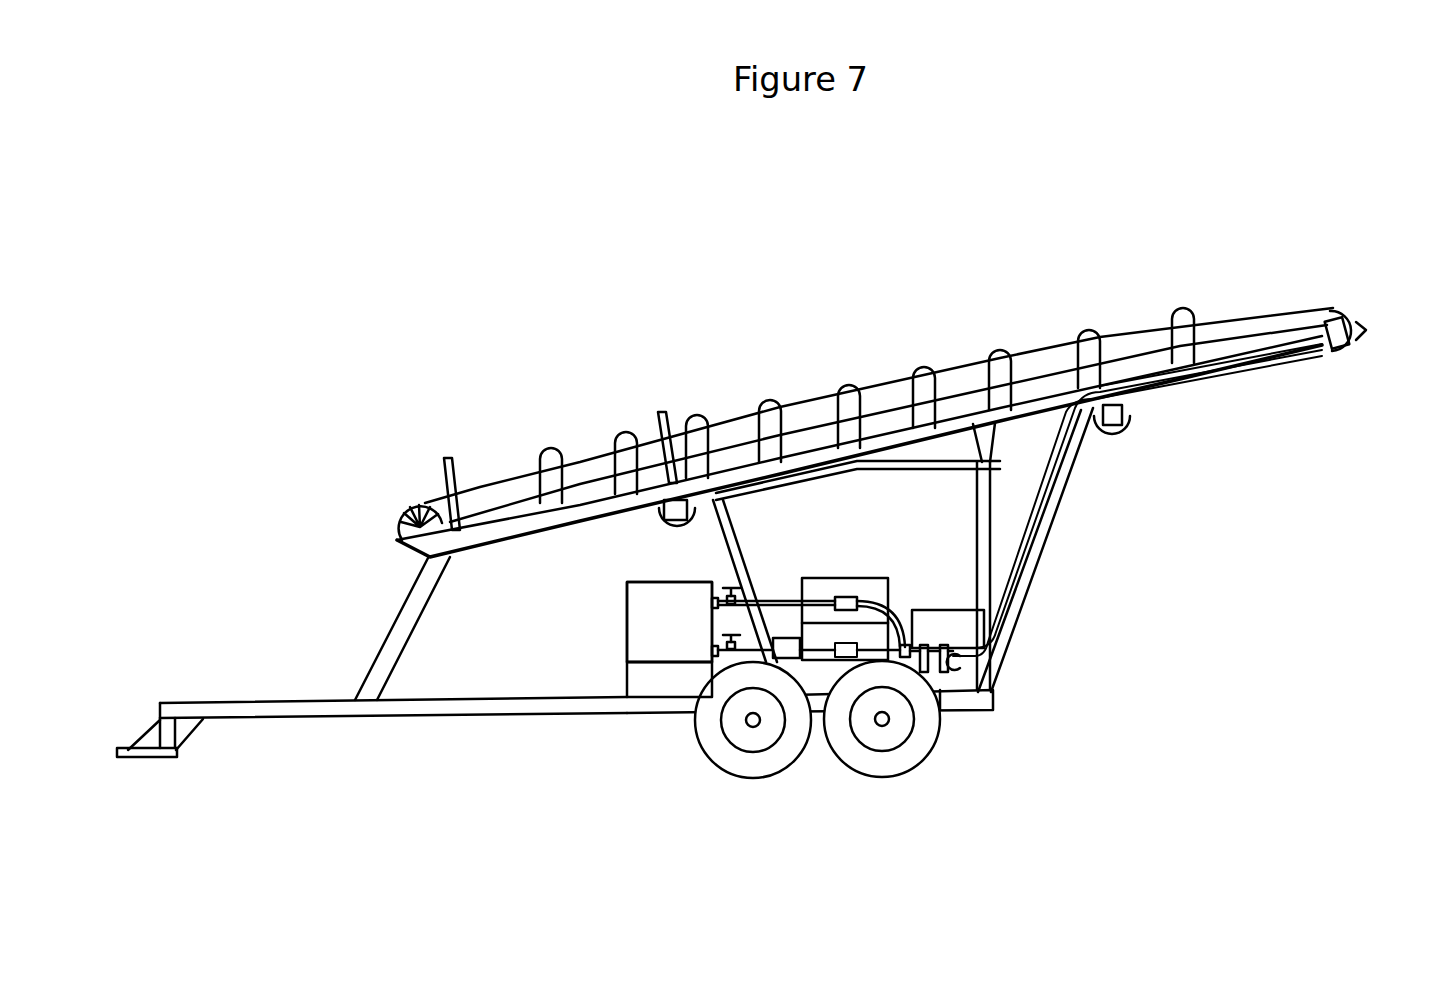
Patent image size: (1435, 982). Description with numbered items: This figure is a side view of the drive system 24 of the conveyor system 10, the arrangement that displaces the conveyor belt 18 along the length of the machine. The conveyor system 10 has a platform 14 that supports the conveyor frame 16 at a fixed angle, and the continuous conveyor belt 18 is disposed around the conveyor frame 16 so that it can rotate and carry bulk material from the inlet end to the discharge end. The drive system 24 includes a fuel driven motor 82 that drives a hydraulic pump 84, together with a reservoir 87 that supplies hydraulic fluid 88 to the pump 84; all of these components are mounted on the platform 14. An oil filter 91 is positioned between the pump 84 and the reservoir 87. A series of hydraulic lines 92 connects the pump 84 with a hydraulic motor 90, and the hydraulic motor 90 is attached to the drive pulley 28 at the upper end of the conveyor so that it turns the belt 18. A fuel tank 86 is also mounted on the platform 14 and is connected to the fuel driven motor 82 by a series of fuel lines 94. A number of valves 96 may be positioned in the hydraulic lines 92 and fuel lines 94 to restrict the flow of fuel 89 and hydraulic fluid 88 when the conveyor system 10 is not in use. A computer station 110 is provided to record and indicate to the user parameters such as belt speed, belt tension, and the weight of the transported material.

The conveyor system 10 is at (879, 246).
The platform 14 is at (280, 720).
The conveyor frame 16 is at (1263, 412).
The conveyor belt 18 is at (1121, 330).
The drive system 24 is at (578, 646).
The drive pulley 28 is at (1328, 306).
The fuel driven motor 82 is at (858, 577).
The hydraulic pump 84 is at (905, 597).
The fuel tank 86 is at (932, 600).
The reservoir 87 is at (618, 605).
The hydraulic fluid 88 is at (682, 636).
The fuel 89 is at (957, 641).
The hydraulic motor 90 is at (1331, 305).
The oil filter 91 is at (790, 660).
The hydraulic lines 92 is at (1050, 528).
The fuel lines 94 is at (789, 636).
The valves 96 is at (722, 585).
The computer station 110 is at (983, 495).